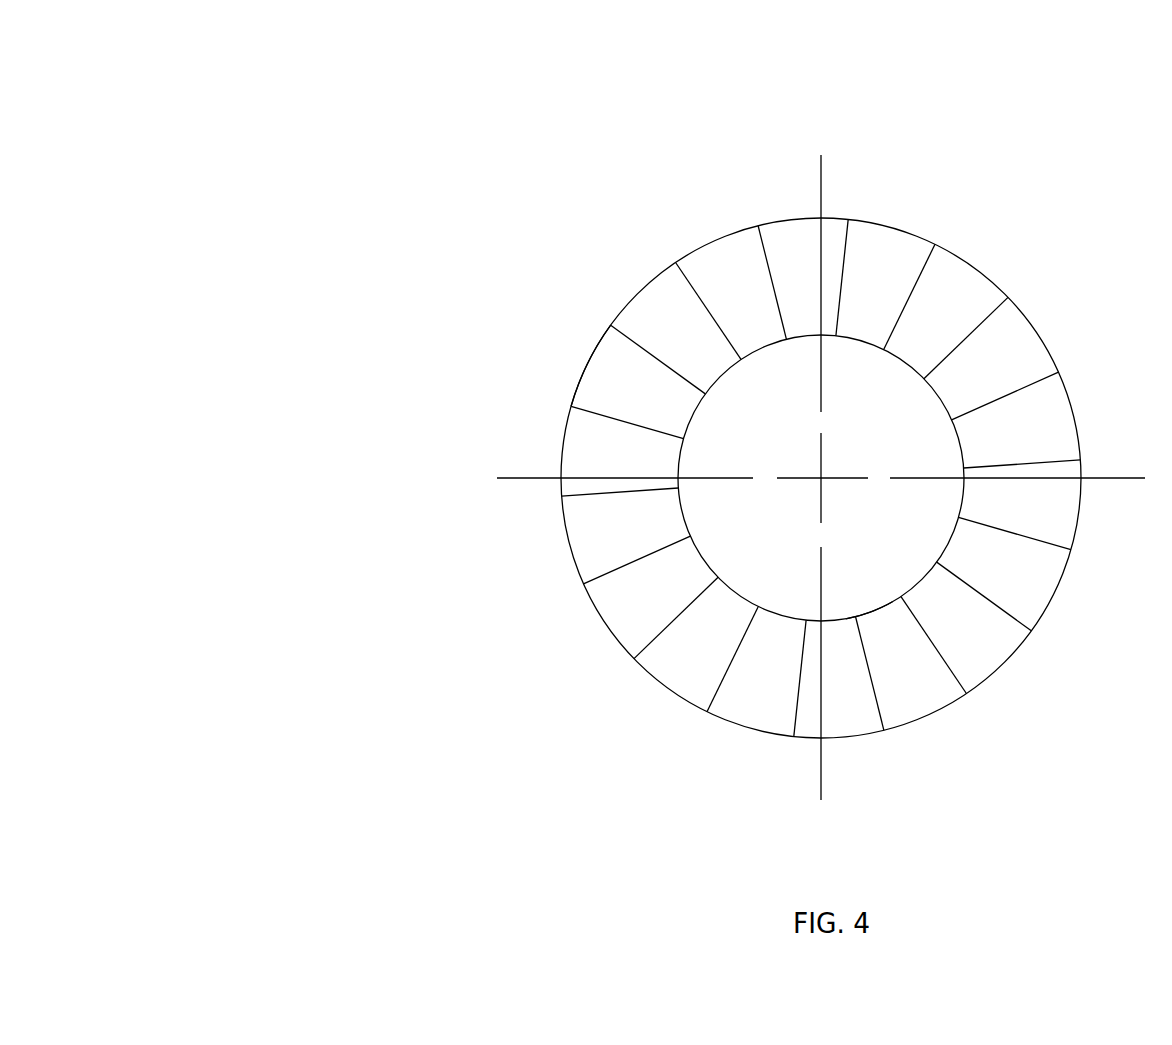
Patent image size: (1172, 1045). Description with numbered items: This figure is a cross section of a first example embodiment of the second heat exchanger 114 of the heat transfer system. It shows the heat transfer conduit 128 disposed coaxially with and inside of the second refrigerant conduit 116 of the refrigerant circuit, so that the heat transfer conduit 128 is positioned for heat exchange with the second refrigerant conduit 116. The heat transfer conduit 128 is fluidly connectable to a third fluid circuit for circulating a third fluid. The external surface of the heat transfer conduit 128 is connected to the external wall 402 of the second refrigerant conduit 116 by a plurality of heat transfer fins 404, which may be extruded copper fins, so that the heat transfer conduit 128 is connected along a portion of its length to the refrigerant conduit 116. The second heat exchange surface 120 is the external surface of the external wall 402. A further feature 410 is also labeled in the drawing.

The second heat exchanger 114 is at (318, 37).
The second heat exchange surface 120 is at (693, 248).
The second refrigerant conduit 116 is at (670, 292).
The heat transfer conduit 128 is at (747, 405).
The external wall 402 is at (596, 348).
The heat transfer fins 404 is at (637, 427).
The inner surface 410 is at (868, 612).